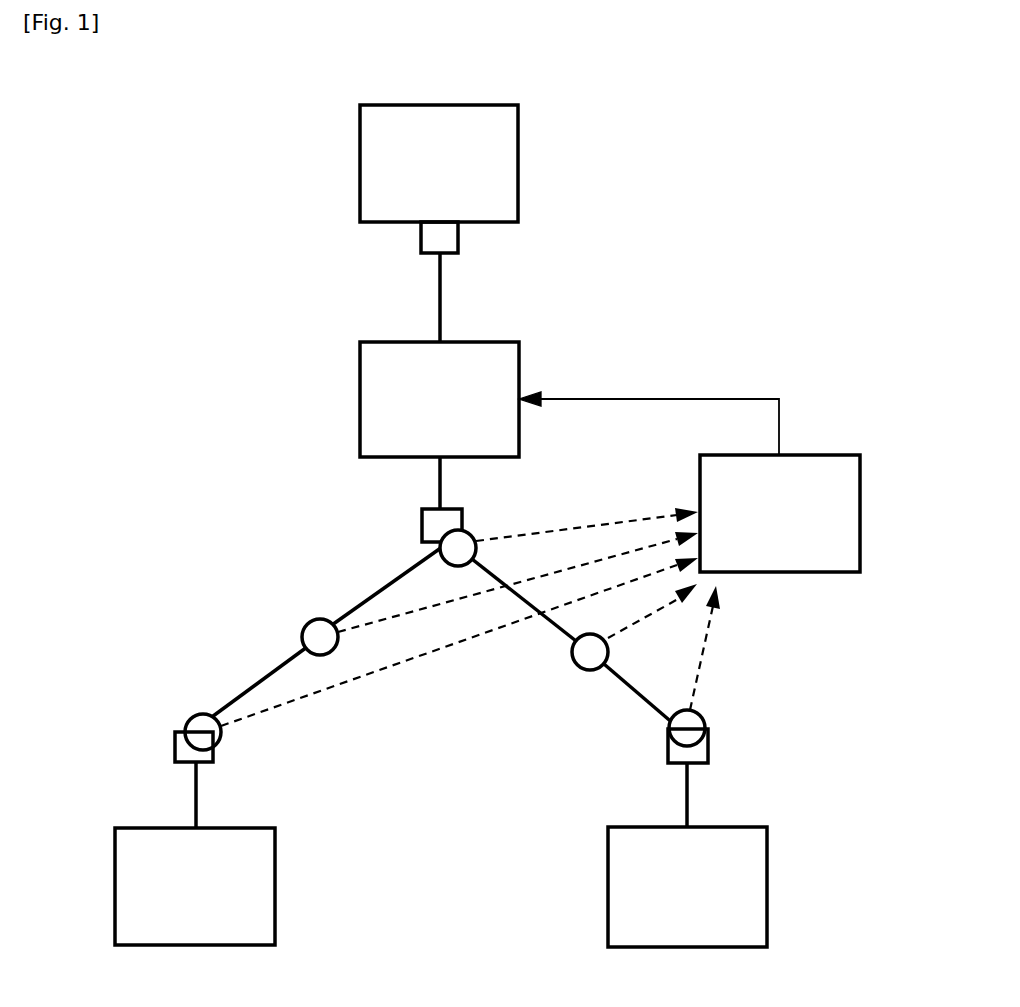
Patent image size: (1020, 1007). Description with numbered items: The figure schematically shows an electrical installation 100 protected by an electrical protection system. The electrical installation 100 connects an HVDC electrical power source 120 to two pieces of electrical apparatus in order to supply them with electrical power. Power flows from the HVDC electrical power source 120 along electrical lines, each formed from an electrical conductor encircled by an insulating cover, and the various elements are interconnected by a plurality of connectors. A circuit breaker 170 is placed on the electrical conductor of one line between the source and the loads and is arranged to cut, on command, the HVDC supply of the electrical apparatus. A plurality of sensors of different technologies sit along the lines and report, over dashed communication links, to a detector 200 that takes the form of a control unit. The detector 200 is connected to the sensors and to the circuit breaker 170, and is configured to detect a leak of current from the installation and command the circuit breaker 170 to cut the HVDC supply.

The electrical installation 100 is at (192, 240).
The HVDC electrical power source 120 is at (380, 224).
The circuit breaker 170 is at (360, 404).
The detector 200 is at (830, 573).